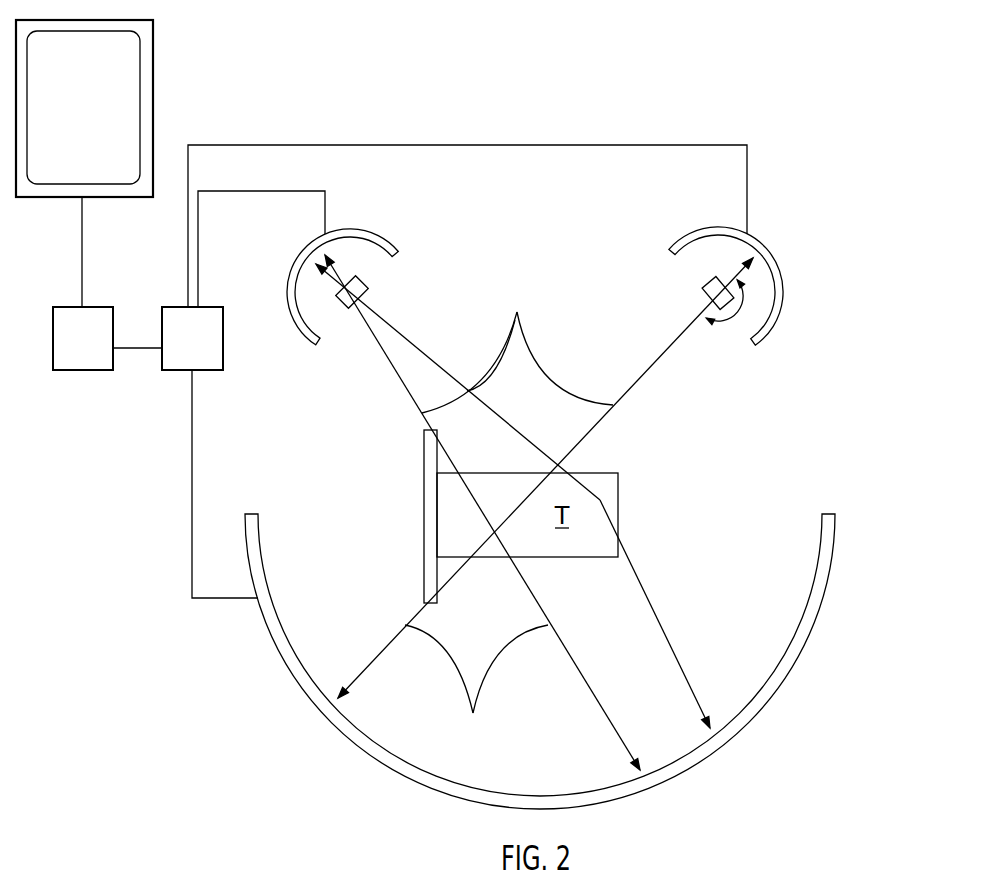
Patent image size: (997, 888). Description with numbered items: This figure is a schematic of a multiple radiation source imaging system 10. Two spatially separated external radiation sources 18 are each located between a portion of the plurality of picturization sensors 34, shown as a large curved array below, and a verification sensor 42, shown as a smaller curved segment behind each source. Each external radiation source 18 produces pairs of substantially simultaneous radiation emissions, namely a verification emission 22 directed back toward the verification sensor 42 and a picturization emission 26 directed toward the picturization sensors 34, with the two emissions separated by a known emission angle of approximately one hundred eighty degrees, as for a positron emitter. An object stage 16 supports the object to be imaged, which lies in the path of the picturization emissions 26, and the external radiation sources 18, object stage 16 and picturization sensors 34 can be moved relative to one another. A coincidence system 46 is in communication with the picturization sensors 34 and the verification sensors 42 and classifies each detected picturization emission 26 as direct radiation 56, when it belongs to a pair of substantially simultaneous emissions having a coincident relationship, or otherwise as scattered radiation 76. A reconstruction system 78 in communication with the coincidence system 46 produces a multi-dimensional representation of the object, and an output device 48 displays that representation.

The imaging system 10 is at (624, 107).
The object stage 16 is at (424, 509).
The external radiation source 18 is at (346, 306).
The verification emission 22 is at (342, 270).
The picturization emission 26 is at (517, 345).
The picturization sensor 34 is at (773, 688).
The verification sensor 42 is at (394, 236).
The coincidence system 46 is at (243, 394).
The output device 48 is at (84, 163).
The direct radiation 56 is at (476, 685).
The scattered radiation 76 is at (683, 668).
The reconstruction system 78 is at (107, 338).